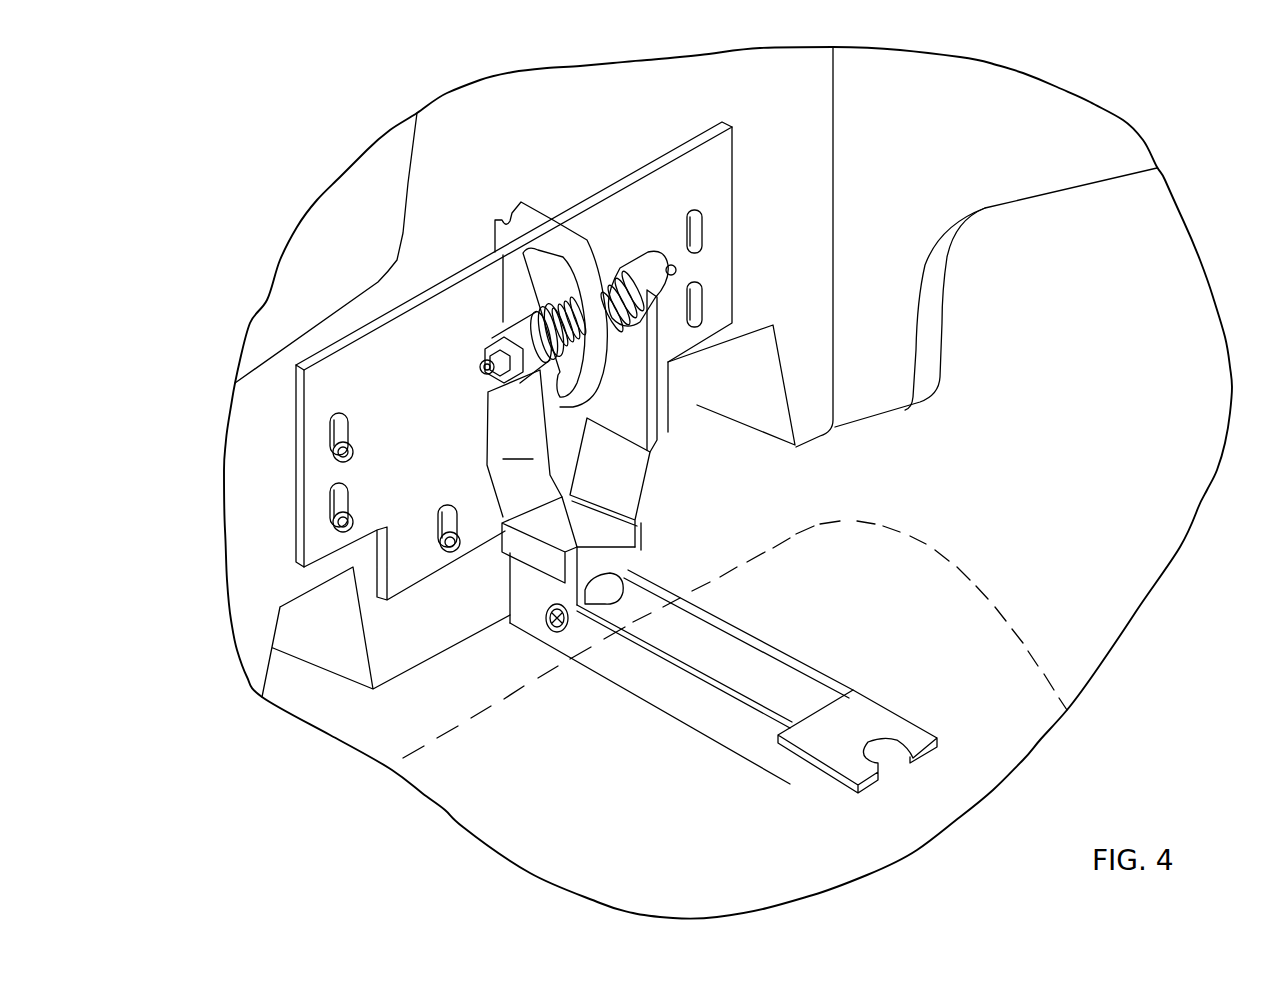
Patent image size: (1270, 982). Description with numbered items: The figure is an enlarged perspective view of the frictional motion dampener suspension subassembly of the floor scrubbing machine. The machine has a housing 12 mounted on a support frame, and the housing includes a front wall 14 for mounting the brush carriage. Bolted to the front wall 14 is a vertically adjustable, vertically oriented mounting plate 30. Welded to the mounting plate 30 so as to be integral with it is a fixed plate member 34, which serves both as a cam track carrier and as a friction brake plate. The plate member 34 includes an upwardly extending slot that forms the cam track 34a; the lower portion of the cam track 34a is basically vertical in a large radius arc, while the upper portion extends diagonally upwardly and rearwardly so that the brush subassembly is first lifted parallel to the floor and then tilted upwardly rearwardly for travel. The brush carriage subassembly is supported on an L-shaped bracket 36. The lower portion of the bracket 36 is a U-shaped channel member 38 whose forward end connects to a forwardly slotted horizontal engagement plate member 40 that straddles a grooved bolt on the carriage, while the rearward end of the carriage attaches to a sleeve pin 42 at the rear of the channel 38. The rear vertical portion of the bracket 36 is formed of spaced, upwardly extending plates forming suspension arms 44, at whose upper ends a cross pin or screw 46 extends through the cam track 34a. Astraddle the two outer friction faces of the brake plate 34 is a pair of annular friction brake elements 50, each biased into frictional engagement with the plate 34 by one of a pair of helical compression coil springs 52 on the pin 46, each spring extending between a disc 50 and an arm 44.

The housing 12 is at (216, 449).
The front wall 14 is at (255, 570).
The mounting plate 30 is at (325, 383).
The fixed plate member 34 is at (615, 378).
The cam track 34a is at (573, 380).
The L-shaped bracket 36 is at (721, 605).
The U-shaped channel member 38 is at (735, 665).
The horizontal engagement plate member 40 is at (865, 713).
The sleeve pin 42 is at (605, 592).
The suspension arms 44 is at (653, 427).
The cross pin or screw 46 is at (667, 268).
The friction brake elements 50 is at (567, 307).
The helical compression coil springs 52 is at (533, 300).